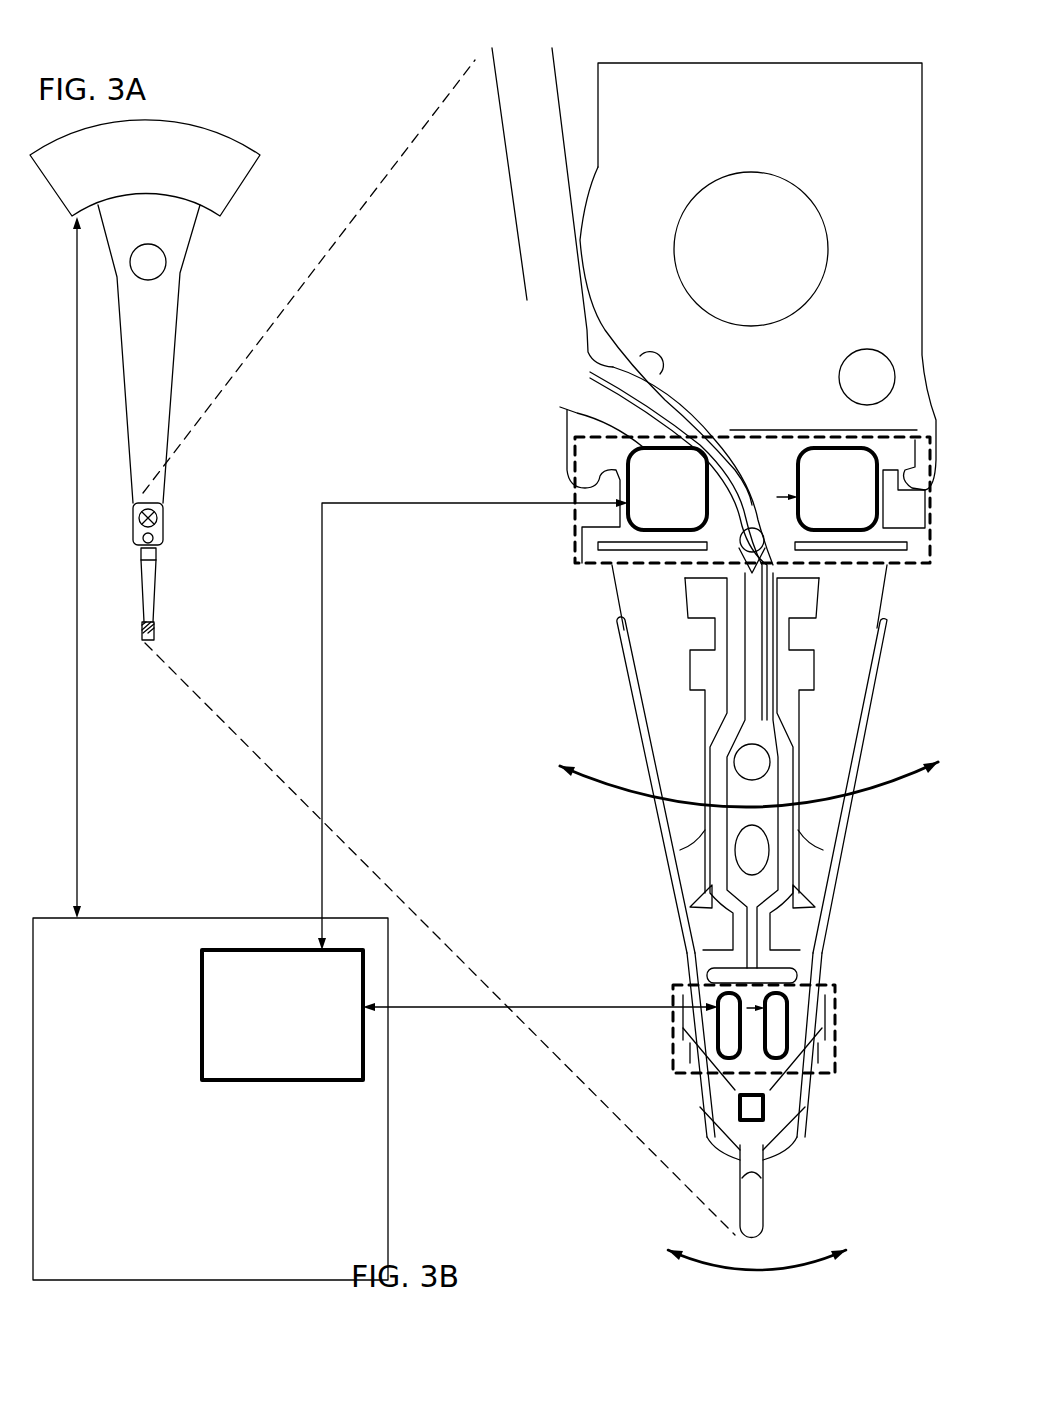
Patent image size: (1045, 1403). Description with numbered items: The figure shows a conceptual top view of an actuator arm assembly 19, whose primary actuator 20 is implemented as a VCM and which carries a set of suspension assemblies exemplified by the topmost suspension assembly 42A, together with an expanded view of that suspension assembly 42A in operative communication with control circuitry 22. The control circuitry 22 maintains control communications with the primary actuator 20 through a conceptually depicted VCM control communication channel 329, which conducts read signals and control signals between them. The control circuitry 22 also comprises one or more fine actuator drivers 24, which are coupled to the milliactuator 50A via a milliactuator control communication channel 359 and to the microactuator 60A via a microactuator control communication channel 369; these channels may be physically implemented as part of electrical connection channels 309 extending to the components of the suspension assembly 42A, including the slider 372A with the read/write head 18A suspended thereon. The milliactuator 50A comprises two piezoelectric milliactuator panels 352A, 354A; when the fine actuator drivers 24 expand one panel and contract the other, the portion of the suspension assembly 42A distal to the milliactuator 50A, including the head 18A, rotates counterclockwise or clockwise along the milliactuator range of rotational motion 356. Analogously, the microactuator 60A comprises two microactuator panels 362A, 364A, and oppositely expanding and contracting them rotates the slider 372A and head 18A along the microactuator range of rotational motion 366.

In FIG. 3A, the actuator arm assembly 19 is at (256, 114).
In FIG. 3A, the primary actuator 20 is at (253, 177).
In FIG. 3A, the VCM control communication channel 329 is at (82, 567).
In FIG. 3A, the milliactuator 50A is at (134, 560).
In FIG. 3B, the milliactuator 50A is at (575, 542).
In FIG. 3A, the topmost suspension assembly 42A is at (190, 560).
In FIG. 3B, the topmost suspension assembly 42A is at (859, 37).
In FIG. 3A, the microactuator 60A is at (132, 637).
In FIG. 3B, the microactuator 60A is at (690, 1030).
In FIG. 3A, the control circuitry 22 is at (210, 1099).
In FIG. 3A, the fine actuator driver 24 is at (282, 1015).
In FIG. 3B, the electrical connection channels 309 is at (507, 266).
In FIG. 3B, the milliactuator control communication channel 359 is at (624, 693).
In FIG. 3B, the milliactuator panel 352A is at (655, 532).
In FIG. 3B, the milliactuator panel 354A is at (850, 532).
In FIG. 3B, the milliactuator range of rotational motion 356 is at (598, 795).
In FIG. 3B, the microactuator control communication channel 369 is at (599, 1017).
In FIG. 3B, the microactuator panel 362A is at (705, 1065).
In FIG. 3B, the microactuator panel 364A is at (800, 1065).
In FIG. 3B, the slider 372A is at (740, 1165).
In FIG. 3B, the read/write head 18A is at (762, 1131).
In FIG. 3B, the microactuator range of rotational motion 366 is at (845, 1257).